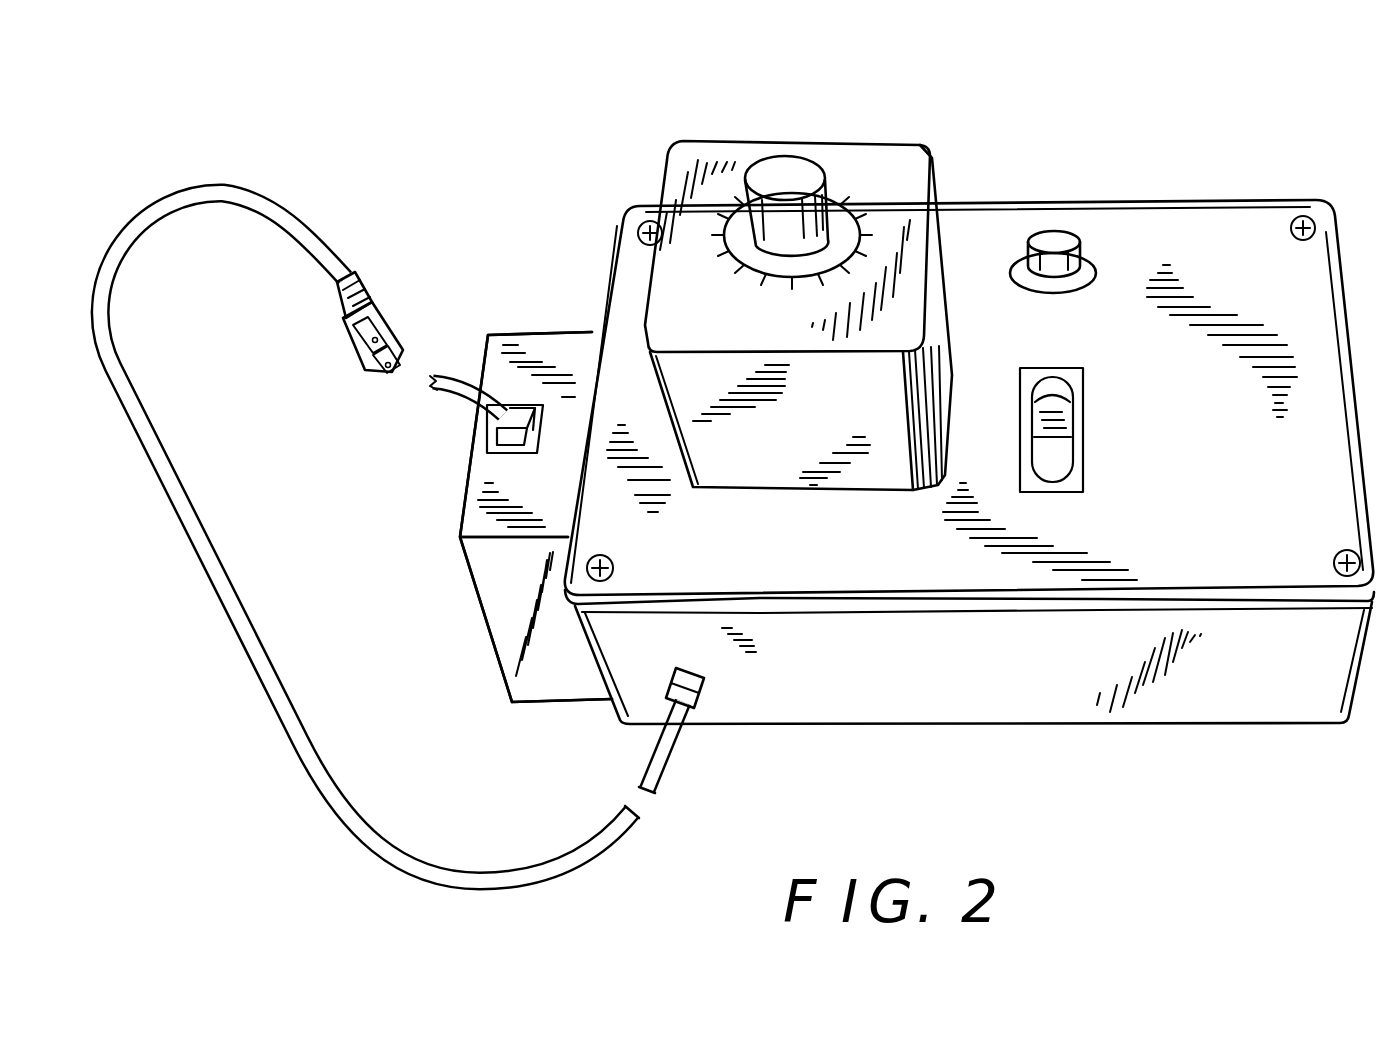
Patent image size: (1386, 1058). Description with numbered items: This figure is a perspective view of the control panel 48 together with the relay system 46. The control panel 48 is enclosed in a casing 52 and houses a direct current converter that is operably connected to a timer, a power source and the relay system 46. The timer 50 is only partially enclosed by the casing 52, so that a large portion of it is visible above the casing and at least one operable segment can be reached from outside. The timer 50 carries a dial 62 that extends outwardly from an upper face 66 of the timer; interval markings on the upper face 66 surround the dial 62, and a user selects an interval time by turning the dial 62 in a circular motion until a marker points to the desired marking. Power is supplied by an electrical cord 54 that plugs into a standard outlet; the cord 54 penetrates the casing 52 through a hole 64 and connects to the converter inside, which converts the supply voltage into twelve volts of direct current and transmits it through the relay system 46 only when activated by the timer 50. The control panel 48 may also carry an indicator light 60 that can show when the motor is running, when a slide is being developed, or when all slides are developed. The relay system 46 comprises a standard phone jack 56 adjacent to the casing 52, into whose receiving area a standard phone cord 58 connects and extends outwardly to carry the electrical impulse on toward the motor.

The relay system 46 is at (503, 238).
The control panel 48 is at (1067, 118).
The timer 50 is at (907, 300).
The casing 52 is at (1262, 202).
The electrical cord 54 is at (398, 330).
The phone jack 56 is at (592, 333).
The phone cord 58 is at (455, 407).
The indicator light 60 is at (1060, 238).
The dial 62 is at (797, 165).
The hole 64 is at (715, 690).
The upper face 66 is at (907, 181).